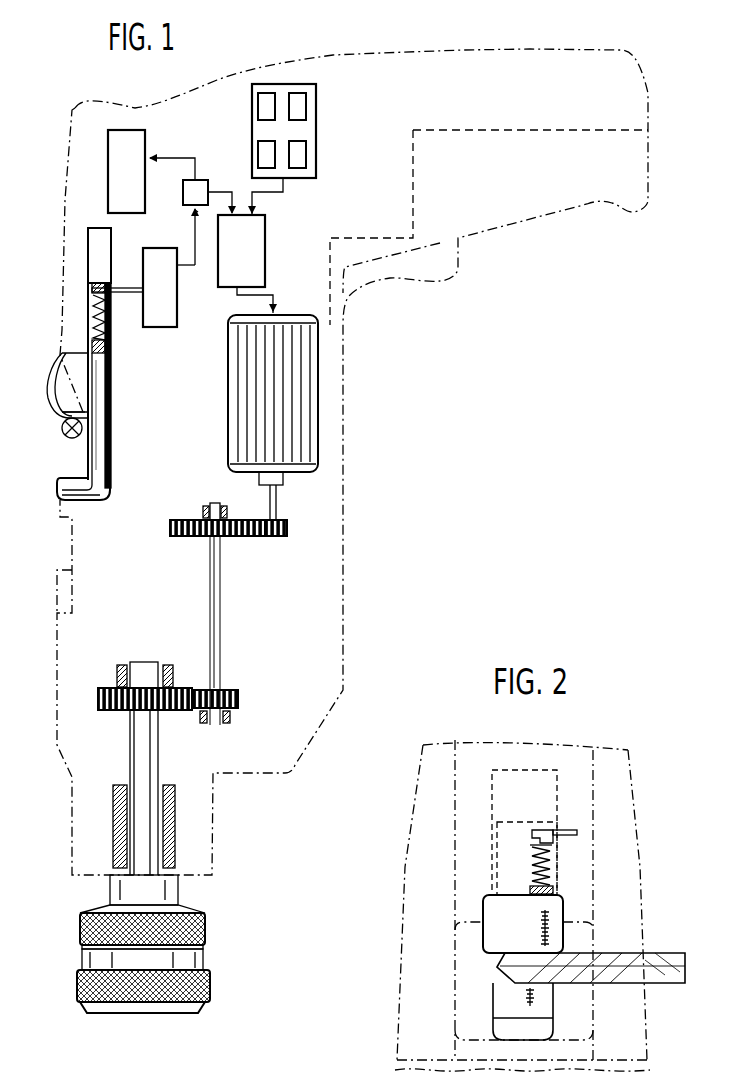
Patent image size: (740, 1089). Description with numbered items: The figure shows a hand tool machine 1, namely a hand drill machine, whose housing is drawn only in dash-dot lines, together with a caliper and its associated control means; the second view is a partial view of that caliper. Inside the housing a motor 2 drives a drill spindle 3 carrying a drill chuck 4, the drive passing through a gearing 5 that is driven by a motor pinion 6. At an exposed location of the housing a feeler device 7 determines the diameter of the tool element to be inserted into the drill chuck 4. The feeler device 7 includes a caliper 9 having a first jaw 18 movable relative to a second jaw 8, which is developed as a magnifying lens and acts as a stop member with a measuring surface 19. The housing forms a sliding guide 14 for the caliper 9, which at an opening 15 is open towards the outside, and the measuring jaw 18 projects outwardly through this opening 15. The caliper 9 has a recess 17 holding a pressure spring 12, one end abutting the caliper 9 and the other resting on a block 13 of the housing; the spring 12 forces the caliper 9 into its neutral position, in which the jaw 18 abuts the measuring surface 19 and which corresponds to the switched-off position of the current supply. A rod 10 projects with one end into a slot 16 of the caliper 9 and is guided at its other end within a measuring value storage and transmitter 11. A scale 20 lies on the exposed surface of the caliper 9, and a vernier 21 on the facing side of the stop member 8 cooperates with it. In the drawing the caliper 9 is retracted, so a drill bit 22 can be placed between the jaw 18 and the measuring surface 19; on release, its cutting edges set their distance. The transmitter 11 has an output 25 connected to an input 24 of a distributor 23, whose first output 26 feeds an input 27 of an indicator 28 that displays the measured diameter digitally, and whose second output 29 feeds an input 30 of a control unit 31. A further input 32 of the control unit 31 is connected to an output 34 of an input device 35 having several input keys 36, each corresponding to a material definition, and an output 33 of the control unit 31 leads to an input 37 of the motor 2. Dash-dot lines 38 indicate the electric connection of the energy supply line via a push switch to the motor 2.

In FIG. 1, the hand tool machine 1 is at (351, 415).
In FIG. 2, the hand tool machine 1 is at (640, 860).
In FIG. 1, the motor 2 is at (248, 420).
In FIG. 1, the drill spindle 3 is at (146, 757).
In FIG. 1, the drill chuck 4 is at (207, 930).
In FIG. 1, the gearing 5 is at (221, 613).
In FIG. 1, the motor pinion 6 is at (285, 529).
In FIG. 1, the feeler device 7 is at (117, 388).
In FIG. 1, the second jaw 8 is at (61, 385).
In FIG. 2, the second jaw 8 is at (546, 905).
In FIG. 1, the caliper 9 is at (97, 443).
In FIG. 2, the caliper 9 is at (506, 878).
In FIG. 1, the rod 10 is at (118, 288).
In FIG. 2, the rod 10 is at (565, 830).
In FIG. 1, the measuring value storage and transmitter 11 is at (155, 308).
In FIG. 1, the pressure spring 12 is at (91, 315).
In FIG. 2, the pressure spring 12 is at (548, 861).
In FIG. 1, the block 13 is at (91, 346).
In FIG. 2, the block 13 is at (555, 891).
In FIG. 1, the sliding guide 14 is at (90, 248).
In FIG. 2, the sliding guide 14 is at (552, 778).
In FIG. 1, the opening 15 is at (74, 455).
In FIG. 2, the opening 15 is at (476, 983).
In FIG. 1, the slot 16 is at (91, 288).
In FIG. 2, the slot 16 is at (537, 835).
In FIG. 2, the recess 17 is at (527, 862).
In FIG. 1, the first jaw 18 is at (70, 491).
In FIG. 2, the first jaw 18 is at (510, 1030).
In FIG. 1, the measuring surface 19 is at (61, 418).
In FIG. 2, the measuring surface 19 is at (488, 956).
In FIG. 2, the scale 20 is at (536, 1000).
In FIG. 2, the vernier 21 is at (549, 935).
In FIG. 1, the drill bit 22 is at (62, 428).
In FIG. 2, the drill bit 22 is at (660, 965).
In FIG. 1, the distributor 23 is at (193, 192).
In FIG. 1, the input 24 is at (193, 215).
In FIG. 1, the output 25 is at (178, 267).
In FIG. 1, the first output 26 is at (185, 190).
In FIG. 1, the input 27 is at (148, 158).
In FIG. 1, the indicator 28 is at (121, 156).
In FIG. 1, the second output 29 is at (212, 193).
In FIG. 1, the input 30 is at (197, 208).
In FIG. 1, the control unit 31 is at (251, 250).
In FIG. 1, the further input 32 is at (258, 212).
In FIG. 1, the output 33 is at (236, 292).
In FIG. 1, the output 34 is at (285, 184).
In FIG. 1, the input device 35 is at (293, 131).
In FIG. 1, the input keys 36 is at (264, 148).
In FIG. 1, the input 37 is at (278, 311).
In FIG. 1, the dash-dot lines 38 is at (415, 160).